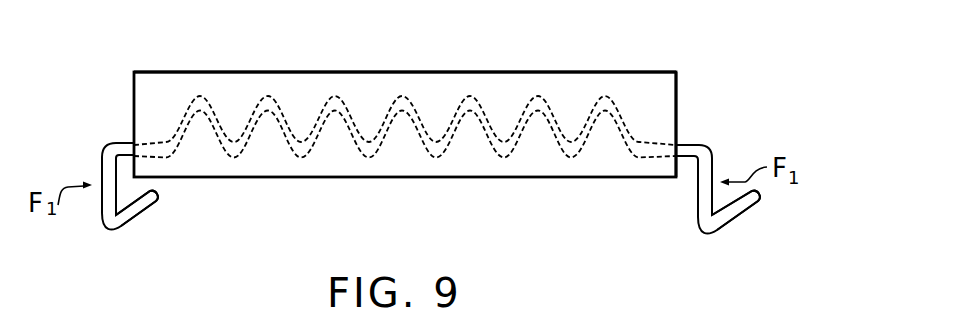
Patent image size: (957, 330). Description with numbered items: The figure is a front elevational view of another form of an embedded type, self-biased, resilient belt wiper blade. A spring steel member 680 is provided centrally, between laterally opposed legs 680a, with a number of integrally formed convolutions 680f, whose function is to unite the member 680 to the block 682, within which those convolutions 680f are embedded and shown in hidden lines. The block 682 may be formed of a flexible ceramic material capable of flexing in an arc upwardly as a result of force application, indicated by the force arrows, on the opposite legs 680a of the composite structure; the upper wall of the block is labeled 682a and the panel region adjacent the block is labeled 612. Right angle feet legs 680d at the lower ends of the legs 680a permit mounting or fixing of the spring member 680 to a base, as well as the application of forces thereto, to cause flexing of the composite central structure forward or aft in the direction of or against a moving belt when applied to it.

The panel 612 is at (692, 93).
The spring steel member 680 is at (709, 147).
The leg 680a is at (102, 168).
The right angle feet leg 680d is at (143, 207).
The convolution 680f is at (254, 133).
The block 682 is at (133, 101).
The housing top wall 682a is at (223, 71).